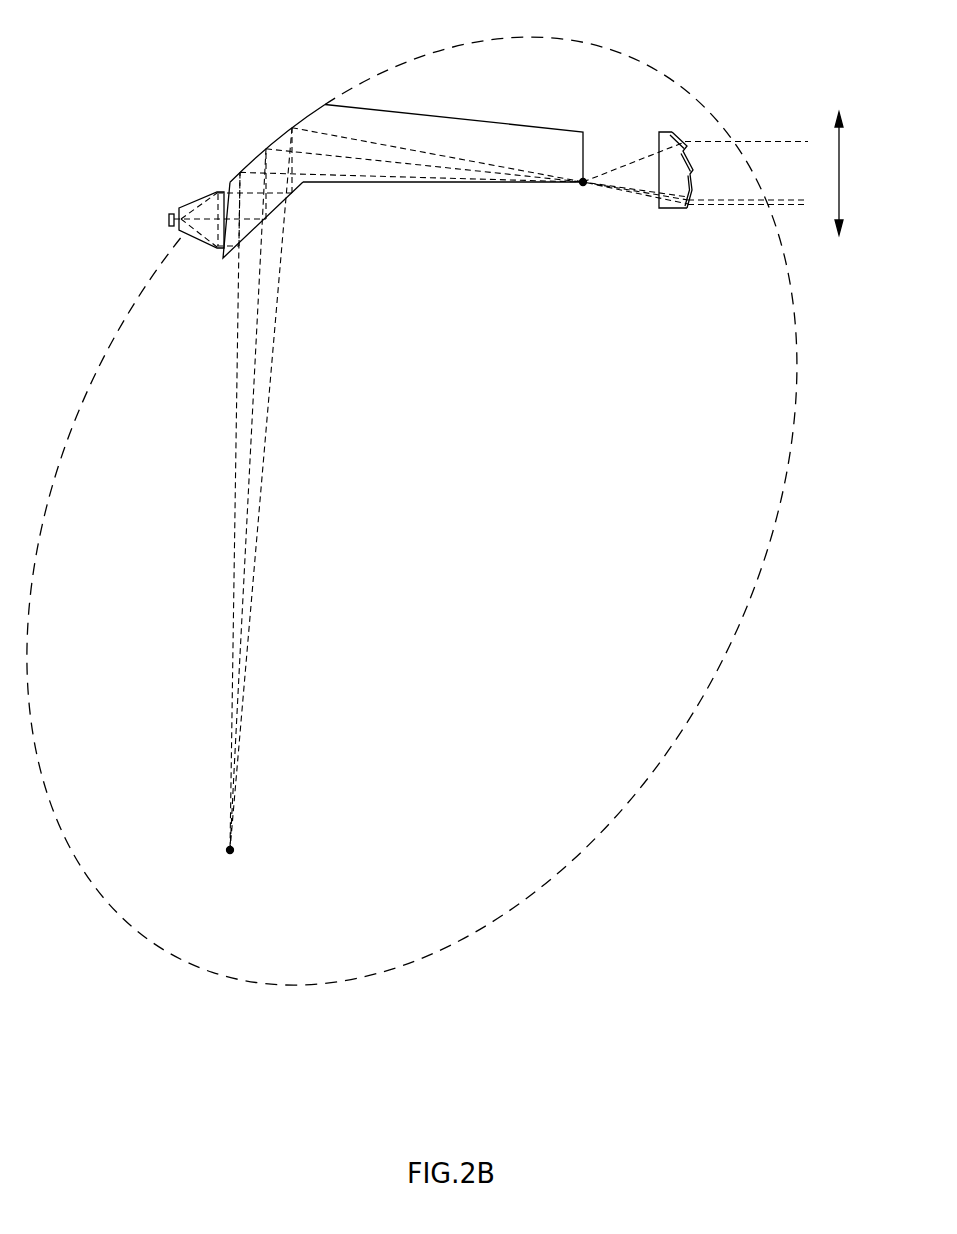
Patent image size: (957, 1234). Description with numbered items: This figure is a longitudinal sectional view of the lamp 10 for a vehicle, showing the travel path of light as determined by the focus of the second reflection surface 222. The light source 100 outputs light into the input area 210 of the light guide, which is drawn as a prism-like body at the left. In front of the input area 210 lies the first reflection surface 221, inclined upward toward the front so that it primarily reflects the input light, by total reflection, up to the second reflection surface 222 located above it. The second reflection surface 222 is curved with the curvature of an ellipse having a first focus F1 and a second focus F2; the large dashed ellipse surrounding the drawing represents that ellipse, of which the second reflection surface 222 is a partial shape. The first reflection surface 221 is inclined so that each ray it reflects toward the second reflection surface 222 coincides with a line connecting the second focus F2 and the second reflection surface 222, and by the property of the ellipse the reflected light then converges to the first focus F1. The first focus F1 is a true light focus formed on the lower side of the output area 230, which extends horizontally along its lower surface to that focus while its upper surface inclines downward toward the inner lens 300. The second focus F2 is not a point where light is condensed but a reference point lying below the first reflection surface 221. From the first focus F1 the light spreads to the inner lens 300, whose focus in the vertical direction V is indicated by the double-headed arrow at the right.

The lamp for a vehicle 10 is at (704, 36).
The light source 100 is at (168, 219).
The input area 210 is at (194, 204).
The first reflection surface 221 is at (275, 216).
The second reflection surface 222 is at (276, 140).
The output area 230 is at (445, 158).
The inner lens 300 is at (672, 186).
The first focus F1 is at (583, 190).
The second focus F2 is at (234, 849).
The vertical direction V is at (842, 172).